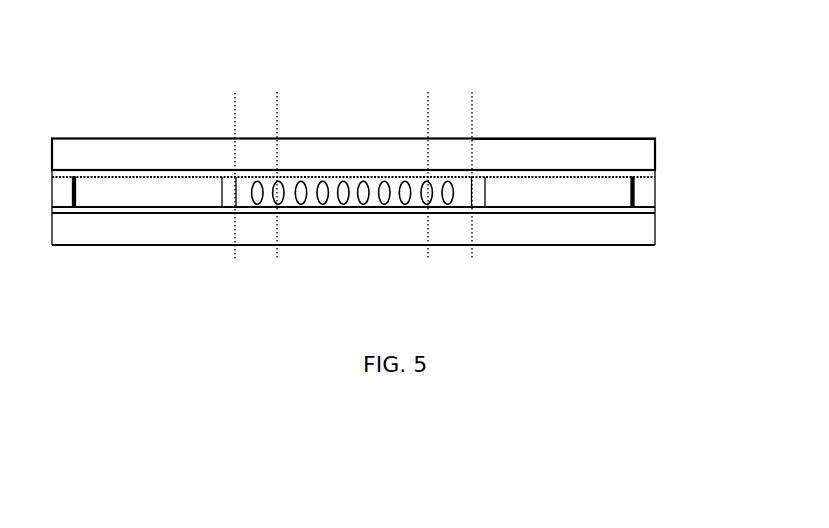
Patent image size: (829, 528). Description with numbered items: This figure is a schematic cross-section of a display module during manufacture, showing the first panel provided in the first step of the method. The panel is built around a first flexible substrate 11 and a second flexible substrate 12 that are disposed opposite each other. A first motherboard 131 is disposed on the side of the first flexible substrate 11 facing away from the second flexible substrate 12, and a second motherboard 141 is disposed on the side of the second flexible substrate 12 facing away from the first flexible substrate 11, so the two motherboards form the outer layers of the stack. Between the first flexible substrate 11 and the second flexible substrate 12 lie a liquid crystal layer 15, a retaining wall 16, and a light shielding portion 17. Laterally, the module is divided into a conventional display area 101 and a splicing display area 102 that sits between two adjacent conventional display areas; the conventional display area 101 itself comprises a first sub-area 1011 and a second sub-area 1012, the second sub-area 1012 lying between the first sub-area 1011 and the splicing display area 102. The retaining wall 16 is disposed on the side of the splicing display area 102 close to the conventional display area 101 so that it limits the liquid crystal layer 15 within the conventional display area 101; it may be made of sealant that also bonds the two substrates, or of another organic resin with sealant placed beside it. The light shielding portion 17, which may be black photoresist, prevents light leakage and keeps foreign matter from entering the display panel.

The conventional display area 101 is at (335, 40).
The first sub-area 1011 is at (413, 103).
The second sub-area 1012 is at (462, 107).
The splicing display area 102 is at (497, 107).
The first motherboard 131 is at (657, 153).
The first flexible substrate 11 is at (657, 172).
The second flexible substrate 12 is at (657, 208).
The second motherboard 141 is at (657, 227).
The liquid crystal layer 15 is at (322, 184).
The retaining wall 16 is at (482, 192).
The light shielding portion 17 is at (642, 193).